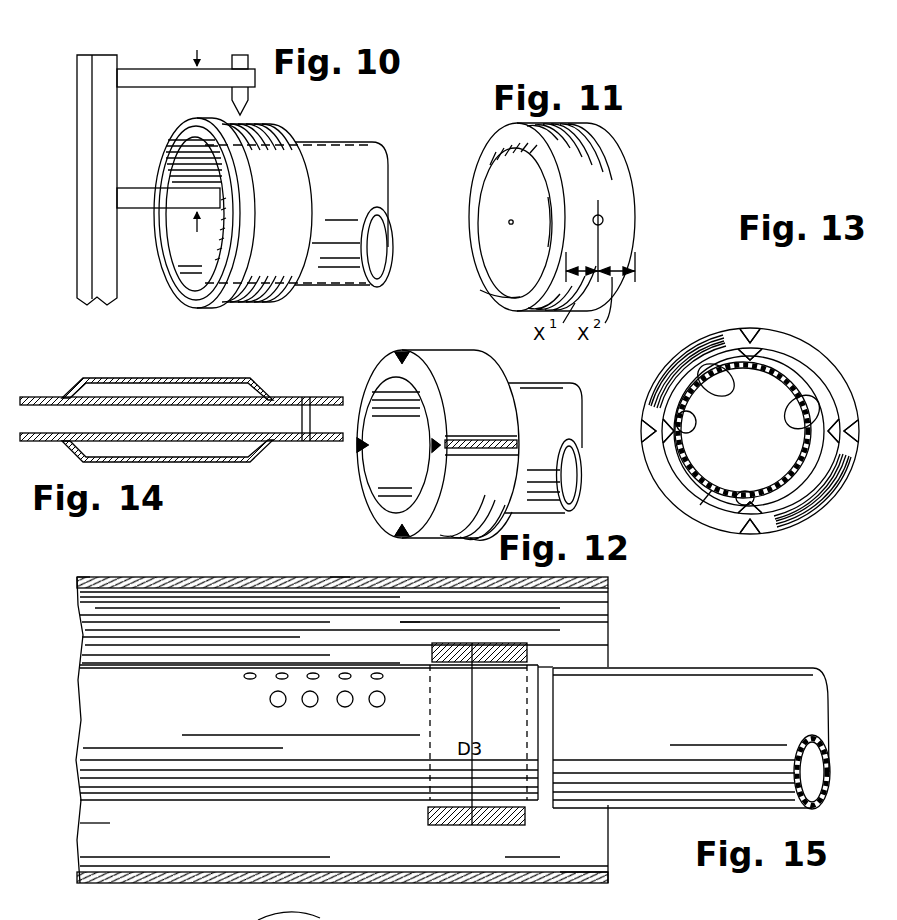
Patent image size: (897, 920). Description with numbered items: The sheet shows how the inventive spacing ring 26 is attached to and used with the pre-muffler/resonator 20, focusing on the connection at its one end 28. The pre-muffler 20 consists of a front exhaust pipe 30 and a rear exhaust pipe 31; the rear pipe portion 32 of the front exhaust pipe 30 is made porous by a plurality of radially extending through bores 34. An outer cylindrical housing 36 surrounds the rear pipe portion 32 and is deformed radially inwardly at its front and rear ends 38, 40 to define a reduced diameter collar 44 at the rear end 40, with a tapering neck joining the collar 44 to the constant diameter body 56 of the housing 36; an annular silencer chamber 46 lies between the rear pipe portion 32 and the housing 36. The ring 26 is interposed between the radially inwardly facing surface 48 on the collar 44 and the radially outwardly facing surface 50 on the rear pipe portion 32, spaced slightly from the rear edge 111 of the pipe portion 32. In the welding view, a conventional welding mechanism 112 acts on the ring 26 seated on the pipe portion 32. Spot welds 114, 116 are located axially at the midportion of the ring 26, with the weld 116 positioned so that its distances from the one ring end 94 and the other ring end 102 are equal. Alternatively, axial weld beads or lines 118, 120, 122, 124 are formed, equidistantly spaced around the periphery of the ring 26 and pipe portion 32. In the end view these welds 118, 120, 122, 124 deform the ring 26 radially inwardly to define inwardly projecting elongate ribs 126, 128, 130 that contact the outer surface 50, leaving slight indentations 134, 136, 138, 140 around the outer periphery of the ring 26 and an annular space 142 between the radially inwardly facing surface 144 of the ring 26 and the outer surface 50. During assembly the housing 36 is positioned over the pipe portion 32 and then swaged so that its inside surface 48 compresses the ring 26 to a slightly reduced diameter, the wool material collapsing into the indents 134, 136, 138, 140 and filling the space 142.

In FIG. 14, the pre-muffler/resonator 20 is at (187, 396).
In FIG. 15, the pre-muffler/resonator 20 is at (268, 573).
In FIG. 10, the ring 26 is at (283, 170).
In FIG. 11, the ring 26 is at (606, 177).
In FIG. 12, the ring 26 is at (487, 416).
In FIG. 13, the ring 26 is at (790, 333).
In FIG. 15, the ring 26 is at (505, 826).
In FIG. 14, the end of the pre-muffler 28 is at (285, 380).
In FIG. 14, the front exhaust pipe 30 is at (32, 394).
In FIG. 14, the rear exhaust pipe 31 is at (333, 403).
In FIG. 15, the rear exhaust pipe 31 is at (690, 719).
In FIG. 10, the rear pipe portion 32 is at (357, 207).
In FIG. 12, the rear pipe portion 32 is at (557, 434).
In FIG. 13, the rear pipe portion 32 is at (702, 377).
In FIG. 14, the rear pipe portion 32 is at (167, 431).
In FIG. 15, the rear pipe portion 32 is at (330, 772).
In FIG. 15, the through bores 34 is at (377, 707).
In FIG. 14, the housing 36 is at (152, 378).
In FIG. 15, the housing 36 is at (340, 580).
In FIG. 14, the front end of the housing 38 is at (69, 378).
In FIG. 14, the rear end of the housing 40 is at (278, 454).
In FIG. 14, the collar 44 is at (317, 447).
In FIG. 14, the annular silencer chamber 46 is at (163, 453).
In FIG. 15, the annular silencer chamber 46 is at (107, 817).
In FIG. 15, the radially inwardly facing surface 48 is at (587, 882).
In FIG. 13, the radially outwardly facing surface 50 is at (762, 365).
In FIG. 14, the radially outwardly facing surface 50 is at (230, 405).
In FIG. 15, the radially outwardly facing surface 50 is at (397, 662).
In FIG. 15, the constant diameter body 56 is at (102, 576).
In FIG. 11, the ring end 94 is at (505, 300).
In FIG. 11, the other ring end 102 is at (636, 222).
In FIG. 15, the rear edge 111 is at (545, 676).
In FIG. 10, the welding mechanism 112 is at (124, 128).
In FIG. 11, the spot weld 114 is at (511, 221).
In FIG. 11, the spot weld 116 is at (604, 220).
In FIG. 12, the axial weld bead/line 118 is at (402, 357).
In FIG. 13, the axial weld bead/line 118 is at (742, 330).
In FIG. 12, the axial weld bead/line 120 is at (500, 440).
In FIG. 13, the axial weld bead/line 120 is at (853, 437).
In FIG. 12, the axial weld bead/line 122 is at (385, 538).
In FIG. 13, the axial weld bead/line 122 is at (743, 530).
In FIG. 12, the axial weld bead/line 124 is at (357, 440).
In FIG. 13, the axial weld bead/line 124 is at (648, 432).
In FIG. 13, the inwardly projecting elongate rib 126 is at (700, 373).
In FIG. 13, the inwardly projecting elongate rib 128 is at (782, 393).
In FIG. 13, the inwardly projecting elongate rib 130 is at (737, 493).
In FIG. 13, the indentation 134 is at (740, 345).
In FIG. 13, the indentation 136 is at (860, 432).
In FIG. 13, the indentation 138 is at (748, 527).
In FIG. 13, the indentation 140 is at (643, 438).
In FIG. 13, the annular space 142 is at (702, 497).
In FIG. 13, the radially inwardly facing surface of the ring 144 is at (691, 468).